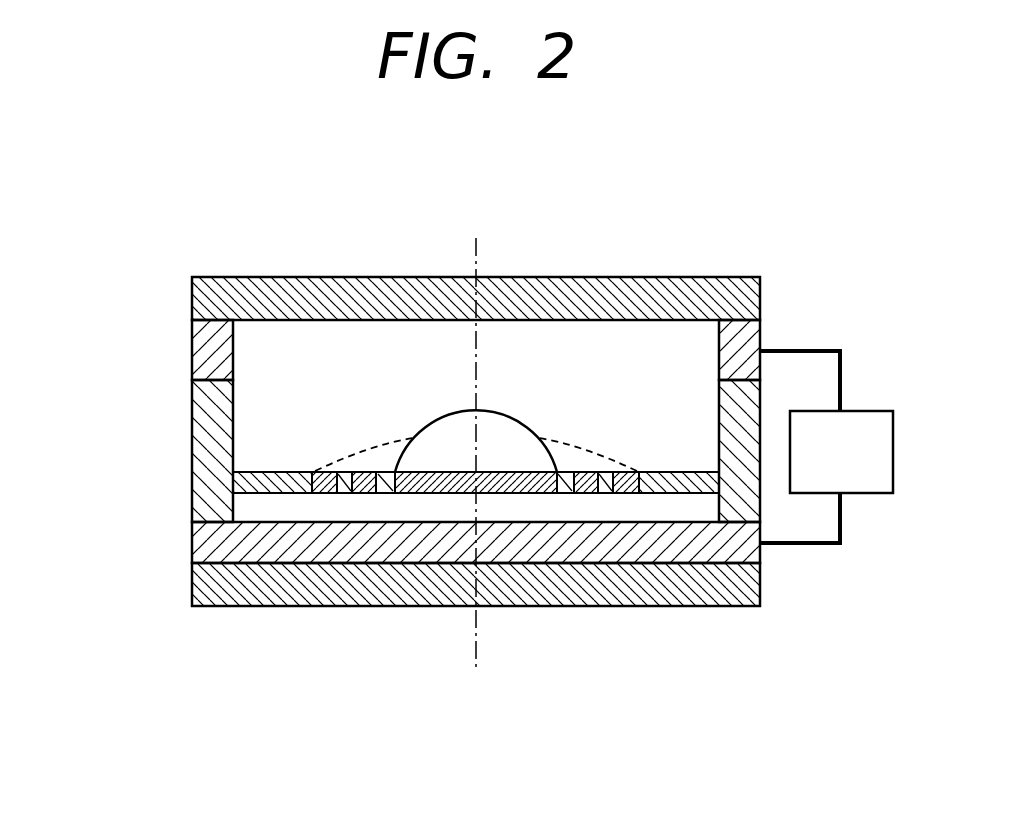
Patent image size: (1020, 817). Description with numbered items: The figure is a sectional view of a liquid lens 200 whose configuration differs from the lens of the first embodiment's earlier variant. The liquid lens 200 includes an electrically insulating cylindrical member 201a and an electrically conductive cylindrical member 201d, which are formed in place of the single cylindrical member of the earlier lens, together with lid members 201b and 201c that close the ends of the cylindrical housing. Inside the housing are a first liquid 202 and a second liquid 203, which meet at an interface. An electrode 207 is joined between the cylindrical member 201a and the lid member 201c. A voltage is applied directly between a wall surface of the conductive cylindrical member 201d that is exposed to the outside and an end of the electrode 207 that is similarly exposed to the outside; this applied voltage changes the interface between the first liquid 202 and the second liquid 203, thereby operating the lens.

The liquid lens 200 is at (150, 174).
The electrically insulating cylindrical member 201a is at (203, 400).
The lid member 201b is at (253, 293).
The lid member 201c is at (348, 592).
The electrically conductive cylindrical member 201d is at (203, 342).
The first liquid 202 is at (438, 443).
The second liquid 203 is at (265, 450).
The electrode 207 is at (240, 555).